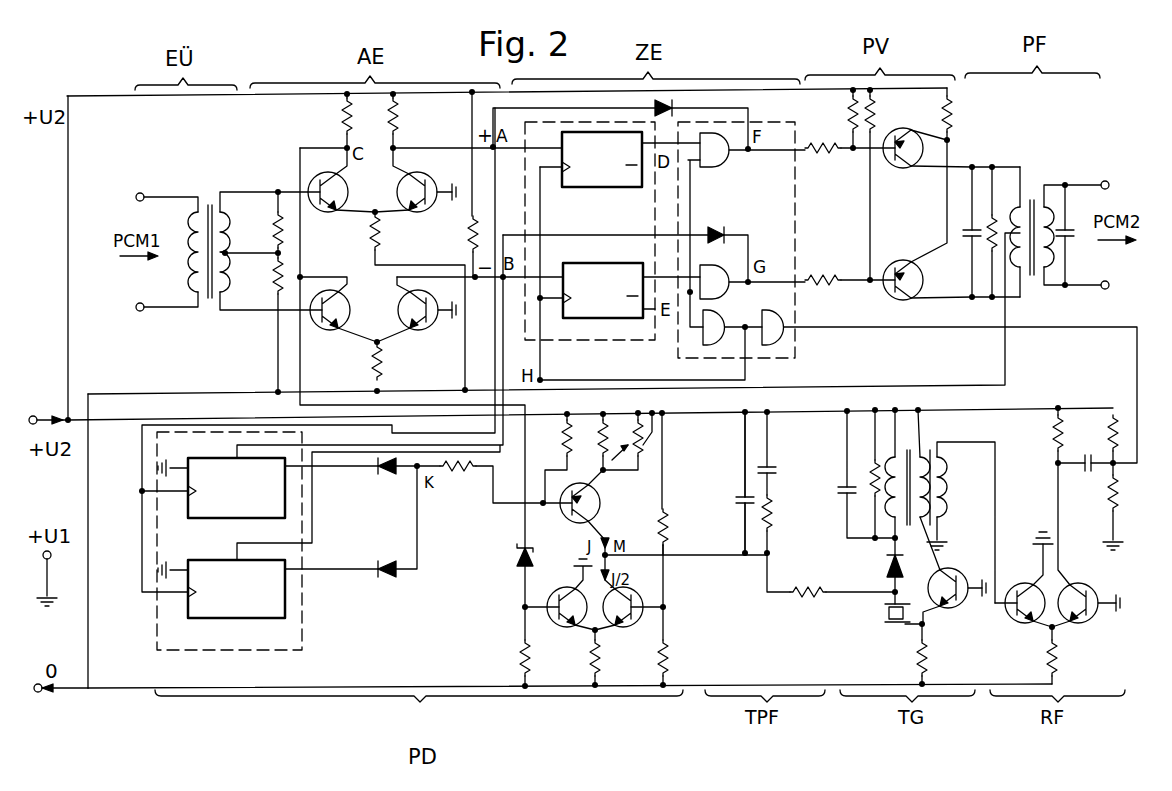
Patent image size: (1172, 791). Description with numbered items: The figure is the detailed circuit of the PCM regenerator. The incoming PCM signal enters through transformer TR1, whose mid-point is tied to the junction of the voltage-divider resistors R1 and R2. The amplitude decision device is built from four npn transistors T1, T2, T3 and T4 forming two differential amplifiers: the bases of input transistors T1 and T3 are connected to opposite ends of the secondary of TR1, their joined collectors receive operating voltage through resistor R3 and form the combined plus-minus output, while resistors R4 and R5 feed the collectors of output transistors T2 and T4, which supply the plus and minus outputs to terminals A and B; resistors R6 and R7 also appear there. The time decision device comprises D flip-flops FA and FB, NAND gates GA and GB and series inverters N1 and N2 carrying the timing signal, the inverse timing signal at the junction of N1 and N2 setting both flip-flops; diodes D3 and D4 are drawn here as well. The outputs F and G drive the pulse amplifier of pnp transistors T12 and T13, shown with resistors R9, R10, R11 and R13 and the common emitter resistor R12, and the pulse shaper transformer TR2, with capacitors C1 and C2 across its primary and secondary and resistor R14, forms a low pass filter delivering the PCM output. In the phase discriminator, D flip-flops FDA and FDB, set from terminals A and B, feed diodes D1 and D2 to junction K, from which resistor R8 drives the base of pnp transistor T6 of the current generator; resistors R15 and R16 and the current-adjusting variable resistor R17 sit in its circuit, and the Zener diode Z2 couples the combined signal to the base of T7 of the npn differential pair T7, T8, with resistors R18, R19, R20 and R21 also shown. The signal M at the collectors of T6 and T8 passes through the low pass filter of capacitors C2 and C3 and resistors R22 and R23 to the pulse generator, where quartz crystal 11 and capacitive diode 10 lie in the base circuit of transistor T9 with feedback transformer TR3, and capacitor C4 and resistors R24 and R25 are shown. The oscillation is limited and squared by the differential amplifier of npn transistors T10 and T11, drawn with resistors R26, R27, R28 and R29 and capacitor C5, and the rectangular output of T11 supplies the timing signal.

The transformer TR1 is at (183, 231).
The pulse shaper transformer TR2 is at (1042, 218).
The feedback transformer TR3 is at (925, 483).
The resistor R1 is at (266, 230).
The resistor R2 is at (265, 276).
The resistor R3 is at (335, 116).
The resistor R4 is at (407, 116).
The resistor R5 is at (460, 234).
The resistor R6 is at (392, 232).
The resistor R7 is at (394, 362).
The resistor R8 is at (494, 484).
The resistor R9 is at (829, 164).
The resistor R10 is at (827, 119).
The resistor R11 is at (893, 185).
The common emitter resistor R12 is at (955, 175).
The resistor R13 is at (837, 265).
The adjustable resistor R14 is at (988, 232).
The resistor R15 is at (561, 434).
The resistor R16 is at (614, 436).
The variable resistor R17 is at (633, 448).
The resistor R18 is at (685, 484).
The resistor R19 is at (500, 660).
The resistor R20 is at (592, 668).
The resistor R21 is at (687, 660).
The resistor R22 is at (771, 513).
The resistor R23 is at (792, 597).
The resistor R24 is at (877, 458).
The resistor R25 is at (892, 660).
The resistor R26 is at (1055, 433).
The resistor R27 is at (1106, 432).
The resistor R28 is at (1106, 505).
The resistor R29 is at (1076, 658).
The npn transistor T1 is at (338, 180).
The npn transistor T2 is at (415, 180).
The npn transistor T3 is at (343, 321).
The npn transistor T4 is at (416, 321).
The pnp transistor T6 is at (593, 512).
The npn transistor T7 is at (560, 607).
The npn transistor T8 is at (629, 605).
The transistor T9 is at (954, 602).
The npn transistor T10 is at (1024, 592).
The npn transistor T11 is at (1087, 617).
The pnp transistor T12 is at (936, 162).
The pnp transistor T13 is at (887, 296).
The capacitor C1 is at (960, 232).
The capacitor C2 is at (903, 369).
The capacitor C3 is at (761, 467).
The capacitor C4 is at (826, 478).
The capacitor C5 is at (1076, 480).
The diode D1 is at (397, 482).
The diode D2 is at (397, 538).
The diode D3 is at (675, 118).
The diode D4 is at (712, 224).
The Zener diode Z2 is at (510, 553).
The D flip-flop FA is at (602, 159).
The D flip-flop FB is at (603, 290).
The D flip-flop FDA is at (268, 488).
The D flip-flop FDB is at (268, 589).
The NAND gate GA is at (722, 159).
The NAND gate GB is at (722, 272).
The inverter stage N1 is at (725, 319).
The inverter stage N2 is at (768, 316).
The capacitive diode 10 is at (886, 561).
The quartz crystal 11 is at (888, 614).